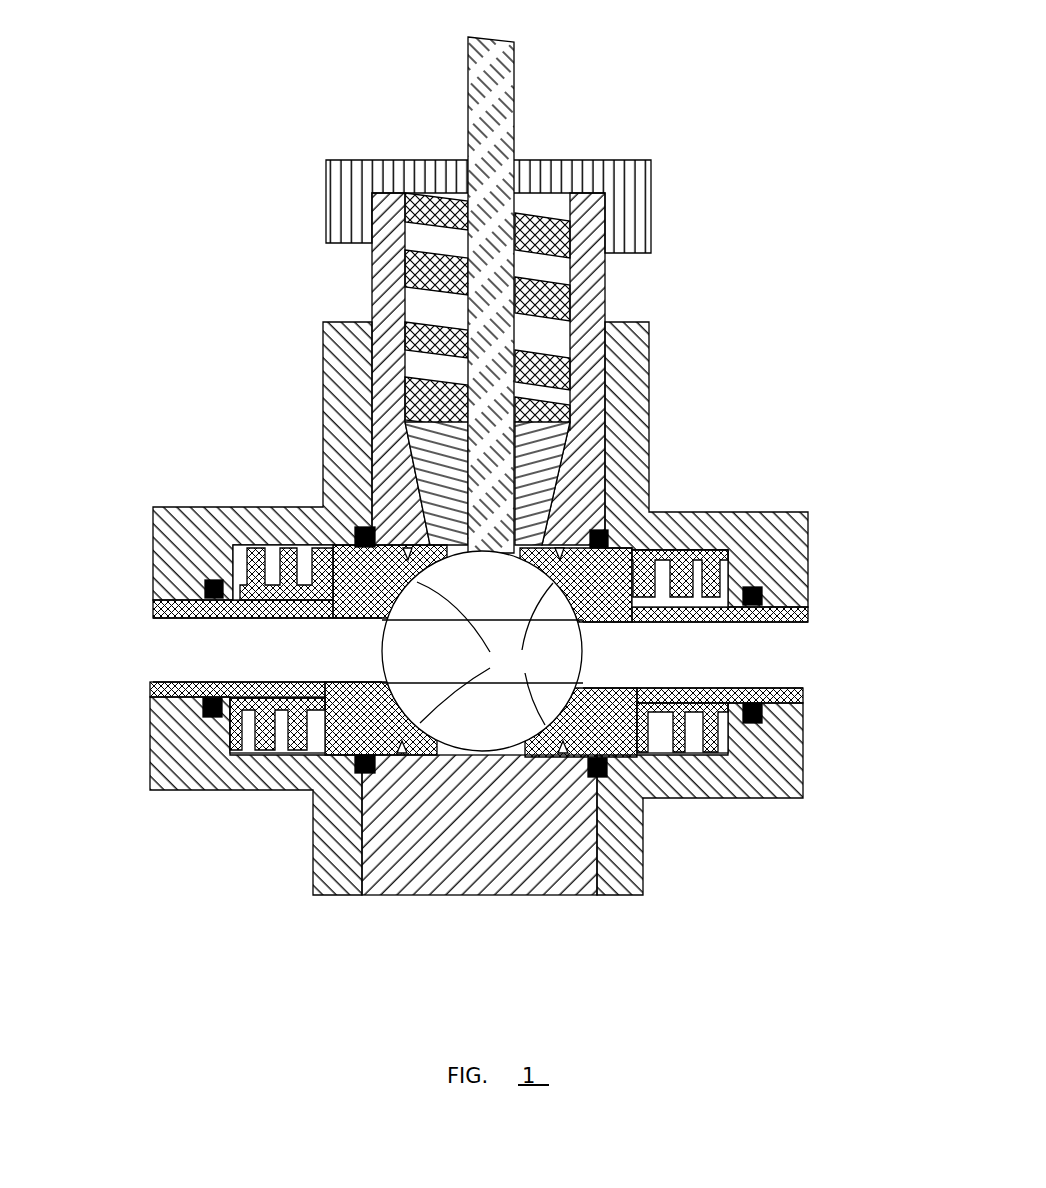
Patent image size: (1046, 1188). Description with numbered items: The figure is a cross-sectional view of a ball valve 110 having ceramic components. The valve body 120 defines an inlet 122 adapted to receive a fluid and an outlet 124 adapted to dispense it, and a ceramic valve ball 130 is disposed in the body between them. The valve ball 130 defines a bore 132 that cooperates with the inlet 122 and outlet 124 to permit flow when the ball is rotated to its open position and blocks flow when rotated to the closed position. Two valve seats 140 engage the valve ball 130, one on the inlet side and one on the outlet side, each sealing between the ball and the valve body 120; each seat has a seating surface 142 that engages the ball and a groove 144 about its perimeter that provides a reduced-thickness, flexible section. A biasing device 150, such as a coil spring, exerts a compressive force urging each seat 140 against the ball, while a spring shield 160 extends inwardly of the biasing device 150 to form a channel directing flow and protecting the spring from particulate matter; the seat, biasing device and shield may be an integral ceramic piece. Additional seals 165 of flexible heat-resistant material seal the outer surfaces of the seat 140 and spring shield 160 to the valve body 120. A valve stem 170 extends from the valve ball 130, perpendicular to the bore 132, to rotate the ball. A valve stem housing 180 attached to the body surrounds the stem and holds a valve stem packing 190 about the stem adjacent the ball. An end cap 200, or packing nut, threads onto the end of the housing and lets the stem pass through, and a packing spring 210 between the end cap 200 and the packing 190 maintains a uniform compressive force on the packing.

The ball valve 110 is at (228, 353).
The valve body 120 is at (332, 500).
The inlet 122 is at (180, 647).
The outlet 124 is at (807, 672).
The valve ball 130 is at (503, 593).
The bore 132 is at (552, 657).
The valve seat 140 is at (380, 585).
The seating surface 142 is at (485, 653).
The groove 144 is at (560, 545).
The biasing device 150 is at (683, 553).
The spring shield 160 is at (220, 612).
The seals 165 is at (213, 585).
The valve stem 170 is at (488, 131).
The valve stem housing 180 is at (383, 285).
The valve stem packing 190 is at (535, 468).
The end cap 200 is at (632, 198).
The packing spring 210 is at (553, 370).